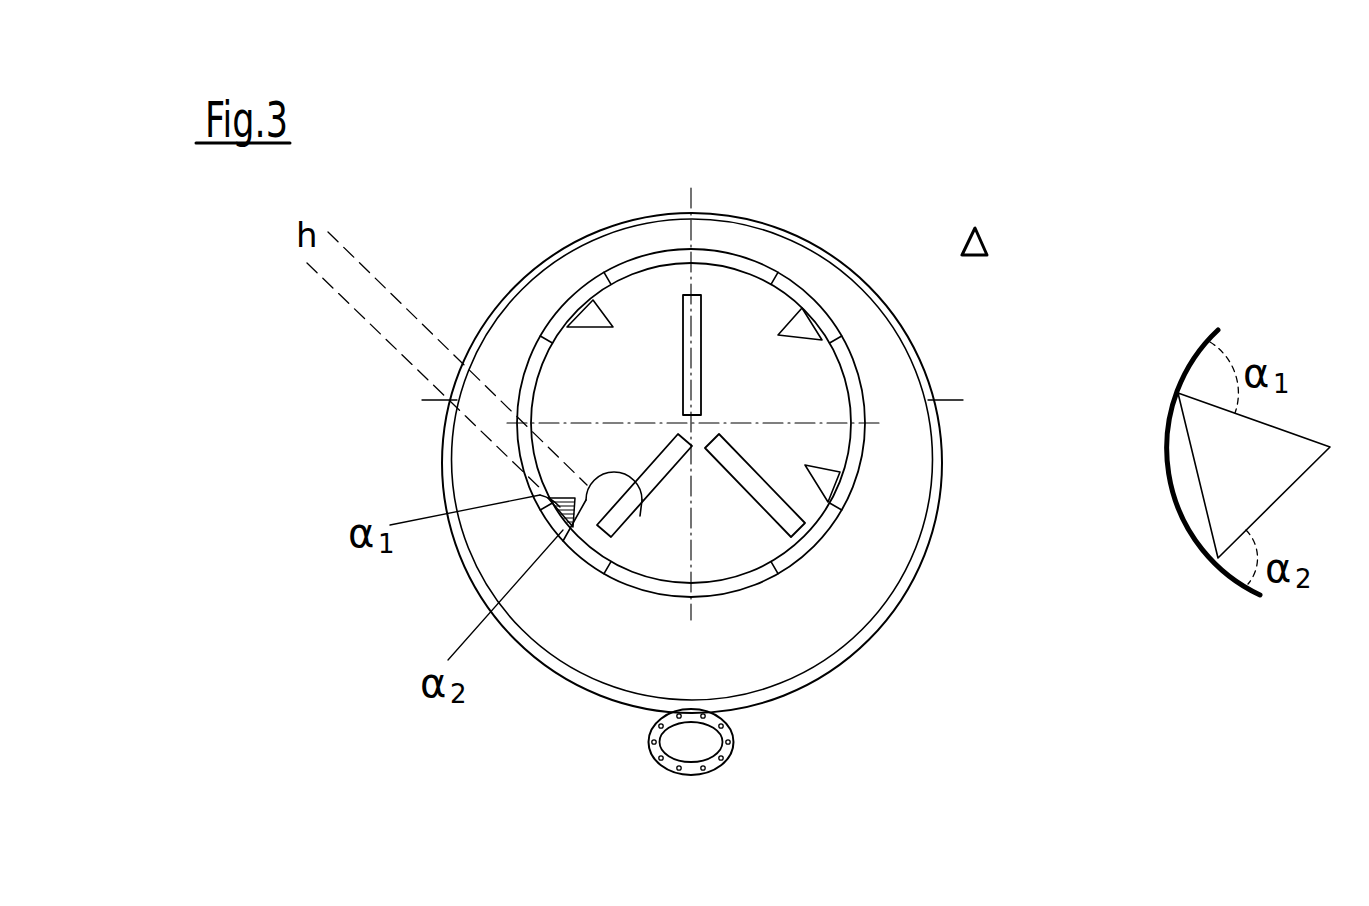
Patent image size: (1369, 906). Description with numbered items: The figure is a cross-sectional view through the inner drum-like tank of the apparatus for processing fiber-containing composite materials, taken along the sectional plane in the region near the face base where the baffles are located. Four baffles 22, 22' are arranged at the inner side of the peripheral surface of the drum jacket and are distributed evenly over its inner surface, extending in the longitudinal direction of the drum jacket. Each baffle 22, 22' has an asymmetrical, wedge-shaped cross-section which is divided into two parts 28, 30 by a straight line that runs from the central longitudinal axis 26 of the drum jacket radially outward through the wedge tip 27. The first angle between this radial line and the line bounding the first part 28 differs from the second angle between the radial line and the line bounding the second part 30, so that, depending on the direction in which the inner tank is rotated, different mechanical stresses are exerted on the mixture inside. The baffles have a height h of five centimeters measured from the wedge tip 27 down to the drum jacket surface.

The baffle 22 is at (908, 501).
The baffle 22' is at (865, 279).
The central longitudinal axis 26 is at (700, 417).
The wedge tip 27 is at (640, 487).
The first part 28 is at (545, 488).
The second part 30 is at (570, 508).